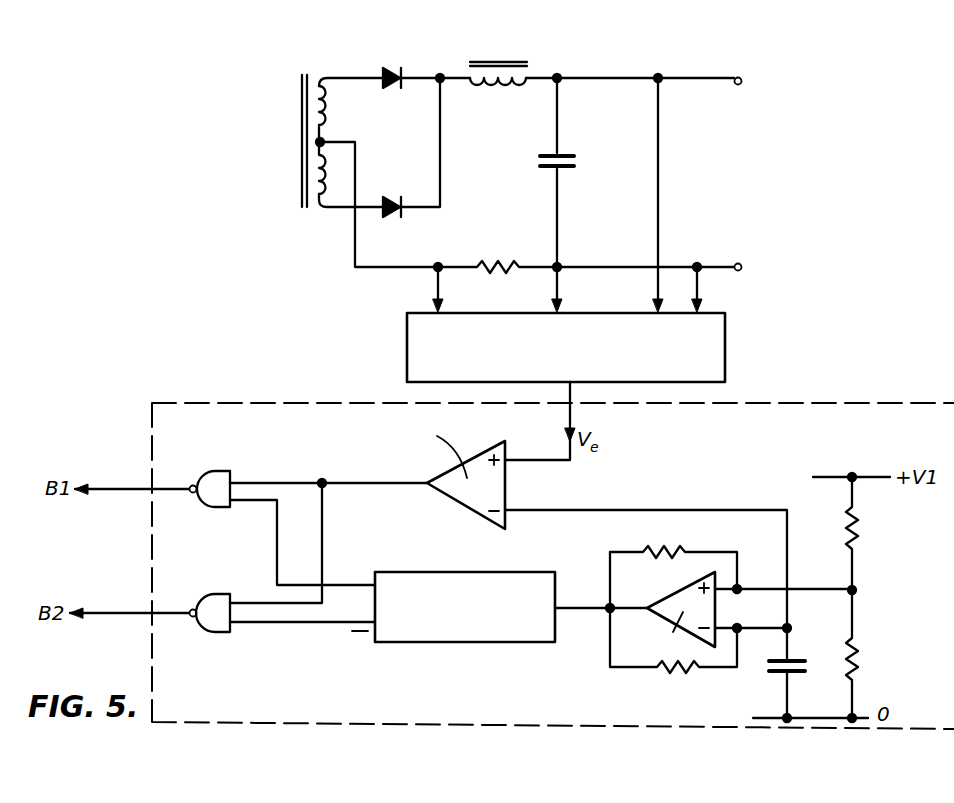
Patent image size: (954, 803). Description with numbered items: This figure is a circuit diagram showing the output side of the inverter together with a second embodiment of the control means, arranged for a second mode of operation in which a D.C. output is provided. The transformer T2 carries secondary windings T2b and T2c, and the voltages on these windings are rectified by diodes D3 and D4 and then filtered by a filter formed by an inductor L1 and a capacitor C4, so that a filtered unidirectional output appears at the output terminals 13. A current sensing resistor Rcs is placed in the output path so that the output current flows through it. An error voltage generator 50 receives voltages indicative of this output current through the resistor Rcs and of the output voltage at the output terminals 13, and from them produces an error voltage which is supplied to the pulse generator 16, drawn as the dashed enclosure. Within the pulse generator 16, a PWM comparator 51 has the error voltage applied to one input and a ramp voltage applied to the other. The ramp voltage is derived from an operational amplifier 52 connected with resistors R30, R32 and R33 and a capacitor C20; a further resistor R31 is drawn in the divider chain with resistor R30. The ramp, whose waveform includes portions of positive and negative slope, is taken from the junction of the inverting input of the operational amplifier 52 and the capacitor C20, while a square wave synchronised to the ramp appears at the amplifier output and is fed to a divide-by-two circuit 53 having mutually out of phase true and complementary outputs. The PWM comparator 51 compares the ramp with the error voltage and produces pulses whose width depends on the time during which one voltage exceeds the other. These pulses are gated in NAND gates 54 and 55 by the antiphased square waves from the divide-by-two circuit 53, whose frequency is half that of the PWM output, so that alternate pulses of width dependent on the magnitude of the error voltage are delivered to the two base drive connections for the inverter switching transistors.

The pulse generator 16 is at (815, 407).
The transformer T2 is at (300, 87).
The secondary winding T2b is at (333, 104).
The secondary winding T2c is at (335, 181).
The diode D3 is at (395, 89).
The diode D4 is at (401, 217).
The inductor L1 is at (505, 90).
The capacitor C4 is at (575, 163).
The current sensing resistor Rcs is at (490, 259).
The output terminals 13 is at (740, 86).
The error voltage generator 50 is at (726, 323).
The PWM comparator 51 is at (507, 488).
The operational amplifier 52 is at (670, 590).
The divide-by-two circuit 53 is at (515, 645).
The NAND gate 54 is at (220, 478).
The NAND gate 55 is at (213, 600).
The resistor R30 is at (864, 528).
The resistor R31 is at (862, 663).
The resistor R32 is at (668, 546).
The resistor R33 is at (682, 678).
The capacitor C20 is at (771, 672).